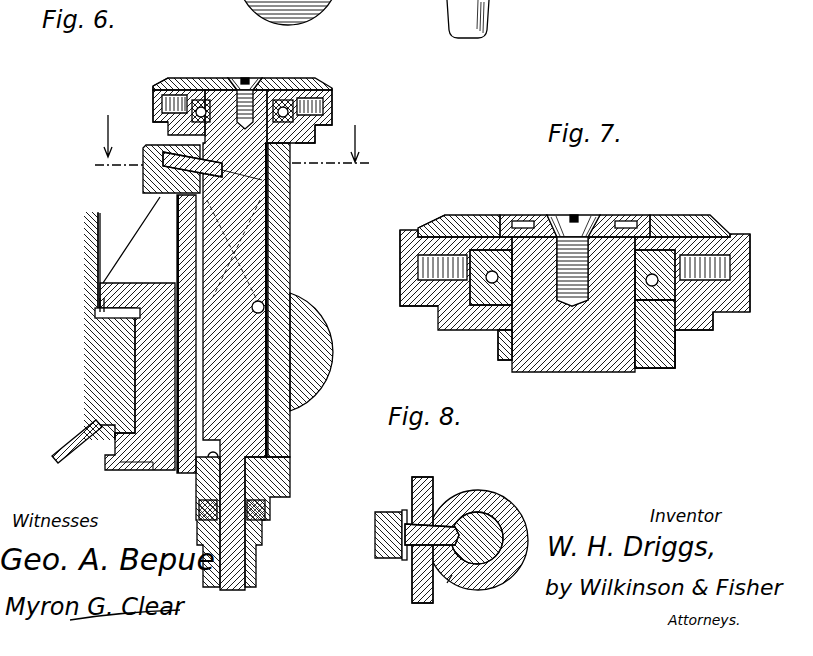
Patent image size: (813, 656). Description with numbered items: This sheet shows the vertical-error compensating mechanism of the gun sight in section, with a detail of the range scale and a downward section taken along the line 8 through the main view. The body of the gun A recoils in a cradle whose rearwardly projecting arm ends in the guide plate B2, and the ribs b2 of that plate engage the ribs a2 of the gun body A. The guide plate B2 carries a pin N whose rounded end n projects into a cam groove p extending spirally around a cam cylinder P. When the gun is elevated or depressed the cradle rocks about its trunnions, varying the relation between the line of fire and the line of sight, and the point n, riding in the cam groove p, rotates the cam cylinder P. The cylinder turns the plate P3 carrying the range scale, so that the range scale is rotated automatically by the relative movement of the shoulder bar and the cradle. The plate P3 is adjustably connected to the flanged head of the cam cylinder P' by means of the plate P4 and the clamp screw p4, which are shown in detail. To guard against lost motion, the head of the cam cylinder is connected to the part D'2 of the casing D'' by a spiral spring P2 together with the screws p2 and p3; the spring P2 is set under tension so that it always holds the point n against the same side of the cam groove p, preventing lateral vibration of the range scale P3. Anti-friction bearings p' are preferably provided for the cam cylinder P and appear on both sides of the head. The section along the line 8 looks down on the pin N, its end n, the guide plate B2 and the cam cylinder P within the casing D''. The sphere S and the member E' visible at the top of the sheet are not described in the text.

In FIG. 6, the sphere S is at (325, 6).
In FIG. 6, the cup member E' is at (477, 31).
In FIG. 6, the cam cylinder P is at (259, 340).
In FIG. 7, the cam cylinder P is at (573, 322).
In FIG. 8, the cam cylinder P is at (494, 526).
In FIG. 6, the cam groove p is at (290, 300).
In FIG. 8, the cam groove p is at (452, 596).
In FIG. 6, the casing D'' is at (311, 335).
In FIG. 7, the casing D'' is at (586, 352).
In FIG. 8, the casing D'' is at (478, 553).
In FIG. 6, the flanged head of the cam cylinder P' is at (242, 92).
In FIG. 7, the flanged head of the cam cylinder P' is at (577, 272).
In FIG. 6, the plate carrying the range scale P3 is at (182, 77).
In FIG. 7, the plate carrying the range scale P3 is at (457, 217).
In FIG. 6, the screw p3 is at (168, 83).
In FIG. 7, the screw p3 is at (442, 232).
In FIG. 6, the plate P4 is at (220, 77).
In FIG. 7, the plate P4 is at (613, 215).
In FIG. 6, the clamp screw p4 is at (255, 80).
In FIG. 7, the clamp screw p4 is at (557, 215).
In FIG. 6, the anti-friction bearings p' is at (266, 300).
In FIG. 7, the anti-friction bearings p' is at (587, 321).
In FIG. 6, the spiral spring P2 is at (153, 97).
In FIG. 7, the spiral spring P2 is at (410, 248).
In FIG. 6, the part of the casing D'2 is at (342, 106).
In FIG. 7, the part of the casing D'2 is at (717, 328).
In FIG. 6, the screw p2 is at (322, 127).
In FIG. 7, the screw p2 is at (722, 325).
In FIG. 6, the section line 8- 8 is at (230, 149).
In FIG. 6, the pin N is at (144, 182).
In FIG. 8, the pin N is at (377, 515).
In FIG. 6, the rounded end of the pin n is at (172, 148).
In FIG. 8, the rounded end of the pin n is at (462, 500).
In FIG. 6, the guide plate B2 is at (129, 253).
In FIG. 8, the guide plate B2 is at (413, 478).
In FIG. 6, the body of the gun A is at (106, 341).
In FIG. 6, the ribs of the gun body a2 is at (117, 314).
In FIG. 6, the ribs of the guide plate b2 is at (100, 305).